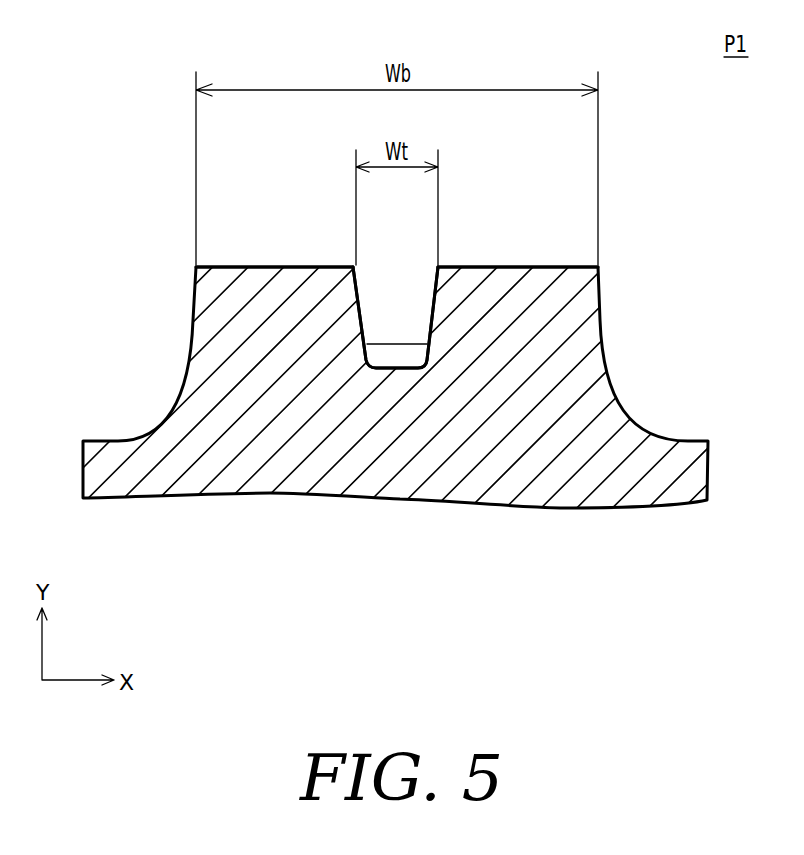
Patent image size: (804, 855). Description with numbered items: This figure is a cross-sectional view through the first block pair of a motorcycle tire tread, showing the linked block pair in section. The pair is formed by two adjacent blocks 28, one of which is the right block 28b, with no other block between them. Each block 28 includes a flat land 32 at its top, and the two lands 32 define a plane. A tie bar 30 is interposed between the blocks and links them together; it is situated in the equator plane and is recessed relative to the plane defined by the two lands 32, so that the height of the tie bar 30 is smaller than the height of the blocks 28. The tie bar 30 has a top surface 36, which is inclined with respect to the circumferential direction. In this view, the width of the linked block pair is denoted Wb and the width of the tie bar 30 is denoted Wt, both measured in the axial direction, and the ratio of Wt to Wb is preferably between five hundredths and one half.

The block 28 is at (402, 272).
The right block 28b is at (273, 244).
The land 32 is at (310, 265).
The tie bar 30 is at (386, 320).
The top surface 36 is at (402, 350).